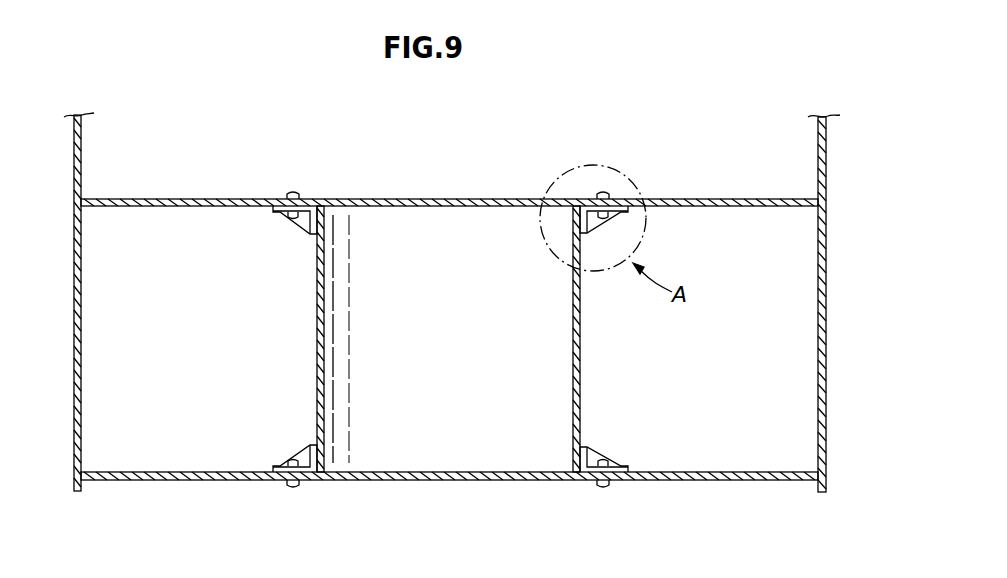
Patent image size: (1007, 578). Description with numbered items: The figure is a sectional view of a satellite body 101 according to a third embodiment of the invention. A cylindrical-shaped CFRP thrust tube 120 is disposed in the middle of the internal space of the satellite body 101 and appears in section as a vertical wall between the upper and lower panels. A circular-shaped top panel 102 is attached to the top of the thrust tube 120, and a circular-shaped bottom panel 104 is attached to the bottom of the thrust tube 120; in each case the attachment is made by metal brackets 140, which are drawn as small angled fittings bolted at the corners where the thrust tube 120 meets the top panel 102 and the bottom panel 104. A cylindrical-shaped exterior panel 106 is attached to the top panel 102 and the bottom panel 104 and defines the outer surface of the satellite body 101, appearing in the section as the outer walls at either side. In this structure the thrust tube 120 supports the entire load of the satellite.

The satellite body 101 is at (490, 176).
The top panel 102 is at (400, 199).
The bottom panel 104 is at (468, 481).
The exterior panel 106 is at (81, 150).
The thrust tube 120 is at (317, 344).
The metal brackets 140 is at (303, 222).